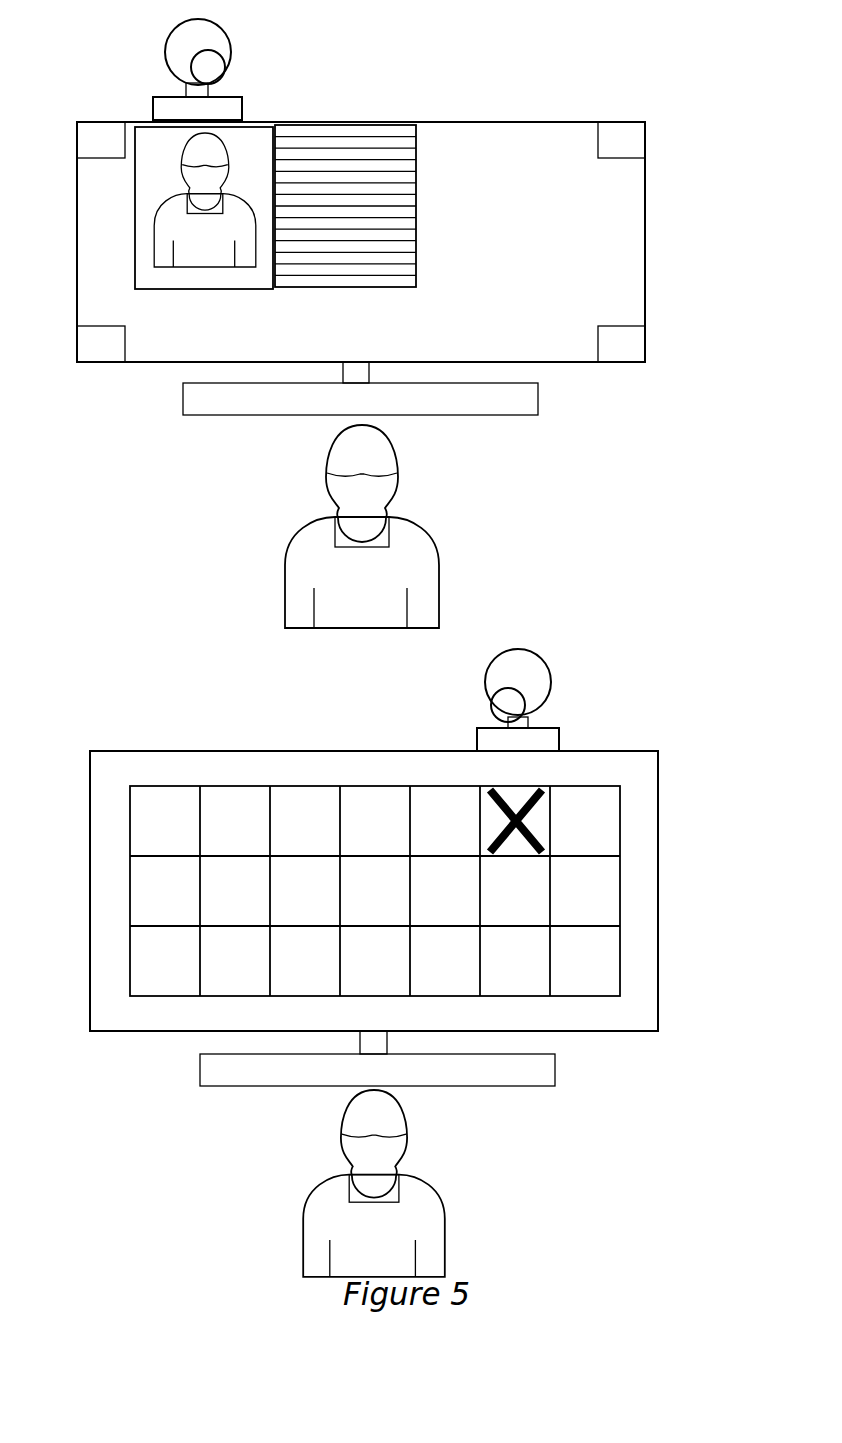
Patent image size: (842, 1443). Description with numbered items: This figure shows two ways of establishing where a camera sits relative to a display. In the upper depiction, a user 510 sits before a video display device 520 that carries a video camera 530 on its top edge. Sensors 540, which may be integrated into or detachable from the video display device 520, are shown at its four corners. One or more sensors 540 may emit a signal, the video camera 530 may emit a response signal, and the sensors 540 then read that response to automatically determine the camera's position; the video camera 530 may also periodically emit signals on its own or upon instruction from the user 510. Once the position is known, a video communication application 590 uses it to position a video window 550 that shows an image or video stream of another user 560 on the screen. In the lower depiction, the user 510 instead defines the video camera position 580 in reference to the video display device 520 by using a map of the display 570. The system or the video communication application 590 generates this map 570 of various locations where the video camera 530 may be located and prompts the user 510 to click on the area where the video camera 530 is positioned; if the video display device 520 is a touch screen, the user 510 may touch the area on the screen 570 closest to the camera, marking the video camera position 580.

The user 510 is at (429, 577).
The video display device 520 is at (362, 121).
The video camera 530 is at (219, 33).
The sensors 540 is at (82, 134).
The video window 550 is at (281, 291).
The another user 560 is at (220, 233).
The map of the display 570 is at (127, 984).
The video camera position 580 is at (537, 816).
The video communication application 590 is at (414, 202).